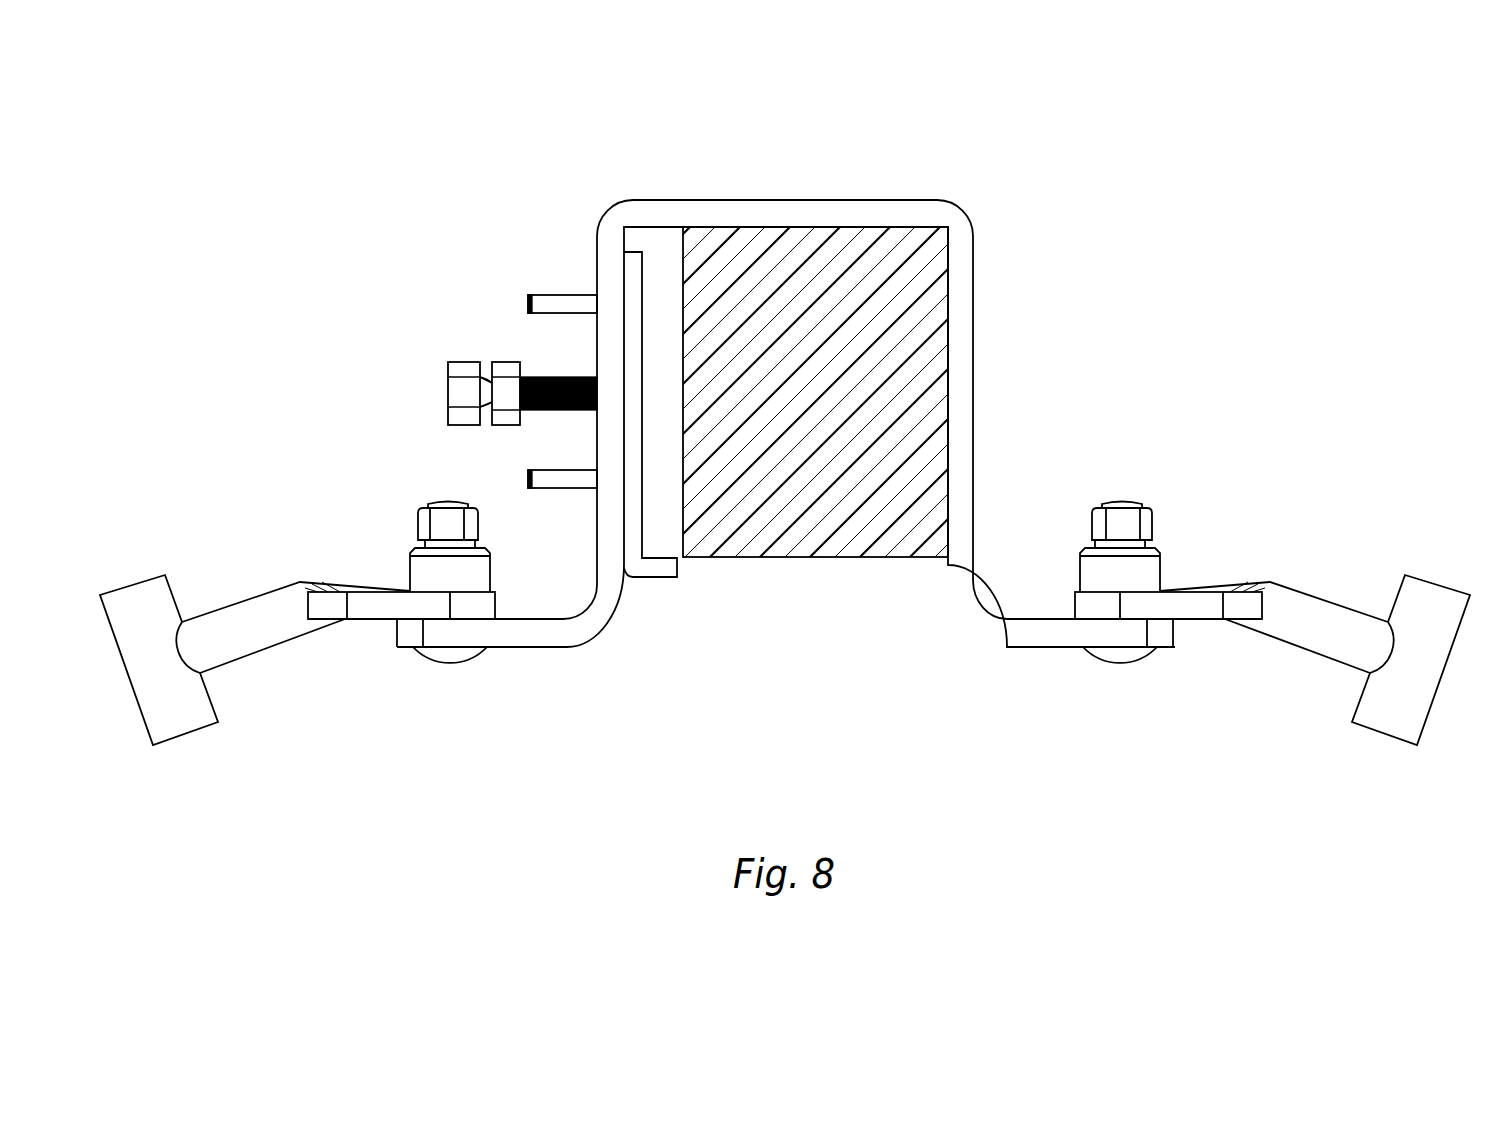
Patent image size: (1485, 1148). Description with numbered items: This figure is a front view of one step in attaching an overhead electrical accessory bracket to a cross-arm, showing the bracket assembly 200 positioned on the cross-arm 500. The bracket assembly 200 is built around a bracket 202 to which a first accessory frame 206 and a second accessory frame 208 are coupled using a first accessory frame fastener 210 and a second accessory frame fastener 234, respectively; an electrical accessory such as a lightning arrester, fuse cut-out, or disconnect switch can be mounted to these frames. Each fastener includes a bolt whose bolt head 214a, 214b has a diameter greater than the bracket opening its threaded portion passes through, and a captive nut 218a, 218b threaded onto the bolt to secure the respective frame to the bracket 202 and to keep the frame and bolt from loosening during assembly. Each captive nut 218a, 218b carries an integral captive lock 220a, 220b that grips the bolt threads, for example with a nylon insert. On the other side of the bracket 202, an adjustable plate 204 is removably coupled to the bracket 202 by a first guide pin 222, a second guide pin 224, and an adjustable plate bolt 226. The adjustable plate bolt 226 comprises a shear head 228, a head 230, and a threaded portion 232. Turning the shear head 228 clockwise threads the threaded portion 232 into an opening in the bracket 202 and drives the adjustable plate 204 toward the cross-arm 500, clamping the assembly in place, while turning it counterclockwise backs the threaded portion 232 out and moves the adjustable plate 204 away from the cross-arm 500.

The bracket assembly 200 is at (833, 183).
The bracket 202 is at (633, 210).
The adjustable plate 204 is at (670, 577).
The first accessory frame 206 is at (220, 575).
The second accessory frame 208 is at (1362, 568).
The first accessory frame fastener 210 is at (458, 673).
The bolt head 214a is at (427, 660).
The bolt head 214b is at (1130, 663).
The captive nut 218a is at (388, 522).
The captive nut 218b is at (1173, 515).
The captive lock 220a is at (410, 562).
The captive lock 220b is at (1162, 552).
The first guide pin 222 is at (568, 292).
The second guide pin 224 is at (575, 490).
The adjustable plate bolt 226 is at (485, 342).
The shear head 228 is at (447, 398).
The head 230 is at (505, 425).
The threaded portion 232 is at (565, 378).
The second accessory frame fastener 234 is at (1105, 702).
The cross-arm 500 is at (827, 557).